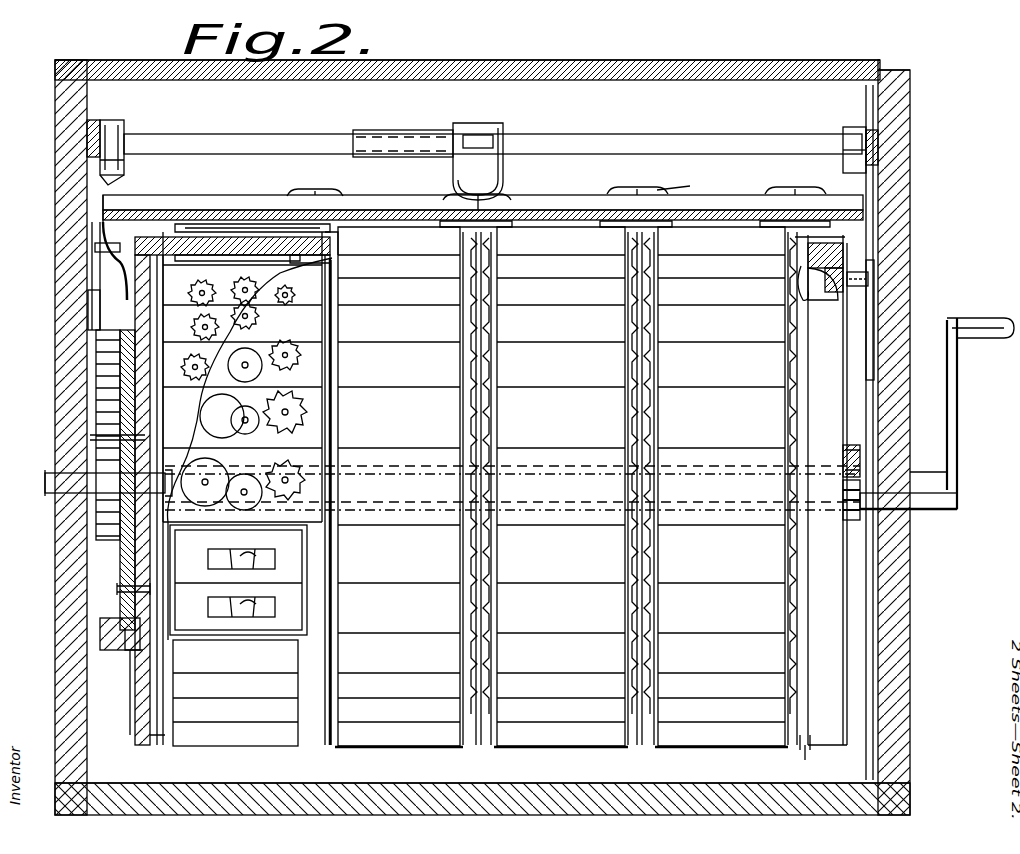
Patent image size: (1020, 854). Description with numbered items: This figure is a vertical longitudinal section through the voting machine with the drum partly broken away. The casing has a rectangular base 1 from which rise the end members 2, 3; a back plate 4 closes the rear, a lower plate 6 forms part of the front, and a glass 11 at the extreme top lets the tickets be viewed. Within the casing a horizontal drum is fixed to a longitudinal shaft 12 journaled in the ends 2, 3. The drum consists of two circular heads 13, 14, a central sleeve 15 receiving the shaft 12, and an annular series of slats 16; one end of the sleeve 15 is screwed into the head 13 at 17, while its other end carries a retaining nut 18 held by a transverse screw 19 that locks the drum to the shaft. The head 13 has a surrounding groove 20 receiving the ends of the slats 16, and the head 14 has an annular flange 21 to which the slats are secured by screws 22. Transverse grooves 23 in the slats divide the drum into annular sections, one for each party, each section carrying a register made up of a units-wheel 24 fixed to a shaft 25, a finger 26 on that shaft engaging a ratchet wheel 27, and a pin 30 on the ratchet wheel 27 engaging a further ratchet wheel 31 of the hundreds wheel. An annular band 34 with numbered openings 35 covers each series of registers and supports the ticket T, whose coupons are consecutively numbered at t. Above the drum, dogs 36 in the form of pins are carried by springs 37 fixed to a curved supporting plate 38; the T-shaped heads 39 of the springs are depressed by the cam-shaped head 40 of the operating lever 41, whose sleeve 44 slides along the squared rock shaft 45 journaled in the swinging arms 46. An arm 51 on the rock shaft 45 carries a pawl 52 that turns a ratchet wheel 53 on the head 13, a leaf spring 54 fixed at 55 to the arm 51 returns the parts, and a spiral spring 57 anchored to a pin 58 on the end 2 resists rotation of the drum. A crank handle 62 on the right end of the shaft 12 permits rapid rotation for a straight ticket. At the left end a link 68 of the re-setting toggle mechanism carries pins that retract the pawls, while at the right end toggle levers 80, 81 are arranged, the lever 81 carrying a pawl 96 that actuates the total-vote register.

The base 1 is at (545, 772).
The end member 2 is at (75, 603).
The end member 3 is at (400, 830).
The back plate 4 is at (130, 825).
The lower plate 6 is at (841, 560).
The glass 11 is at (612, 78).
The longitudinal shaft 12 is at (905, 510).
The circular head 13 is at (93, 373).
The circular head 14 is at (843, 627).
The central tube or sleeve 15 is at (728, 470).
The slats or bars 16 is at (340, 268).
The screwed connection 17 is at (165, 447).
The retaining nut 18 is at (850, 522).
The transverse screw 19 is at (862, 452).
The surrounding groove 20 is at (163, 237).
The annular flange 21 is at (805, 296).
The screws or fastenings 22 is at (808, 262).
The transverse grooves 23 is at (645, 612).
The units-wheel 24 is at (478, 355).
The transverse shaft 25 is at (335, 425).
The radially projecting finger 26 is at (330, 296).
The ratchet wheel 27 is at (300, 256).
The pin 30 is at (238, 255).
The ratchet wheel 31 is at (195, 236).
The register covering member 34 is at (630, 742).
The openings 35 is at (225, 570).
The dogs 36 is at (692, 173).
The springs 37 is at (315, 189).
The supporting plate 38 is at (568, 202).
The T-shaped free ends 39 is at (795, 189).
The cam-shaped head 40 is at (478, 161).
The operating lever 41 is at (480, 133).
The sleeve 44 is at (428, 129).
The rock shaft 45 is at (323, 132).
The arms or levers 46 is at (878, 132).
The arm 51 is at (103, 210).
The dog or pawl 52 is at (95, 262).
The ratchet wheel 53 is at (110, 645).
The leaf spring 54 is at (124, 165).
The fixing point 55 is at (126, 128).
The spiral spring 57 is at (90, 437).
The pin 58 is at (96, 360).
The crank handle 62 is at (960, 318).
The link 68 is at (88, 300).
The toggle lever 80 is at (878, 213).
The toggle lever 81 is at (876, 310).
The dog or pawl 96 is at (868, 272).
The ticket T is at (451, 567).
The ticket section numbers t is at (562, 615).